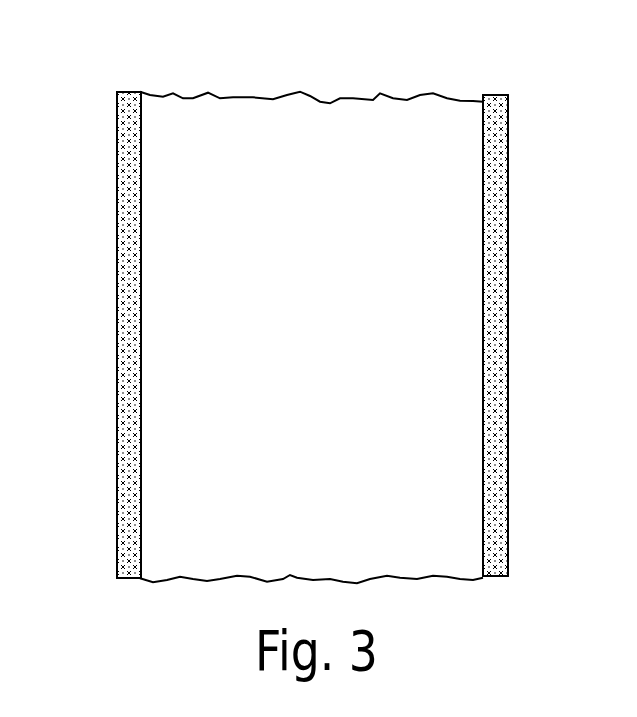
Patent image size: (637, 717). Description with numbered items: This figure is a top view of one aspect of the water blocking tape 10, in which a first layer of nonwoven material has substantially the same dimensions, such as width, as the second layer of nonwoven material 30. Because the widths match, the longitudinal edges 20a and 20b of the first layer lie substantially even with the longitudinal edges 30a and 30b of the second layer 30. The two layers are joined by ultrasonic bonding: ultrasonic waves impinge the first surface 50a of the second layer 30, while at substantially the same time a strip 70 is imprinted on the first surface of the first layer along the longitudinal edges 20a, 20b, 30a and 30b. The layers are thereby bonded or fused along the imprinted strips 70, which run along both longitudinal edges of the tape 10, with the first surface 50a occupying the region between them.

The water blocking tape 10 is at (422, 68).
The longitudinal edge of the first layer 20a is at (116, 493).
The longitudinal edge of the first layer 20b is at (508, 128).
The second layer of nonwoven material 30 is at (157, 190).
The longitudinal edge of the second layer 30a is at (116, 555).
The longitudinal edge of the second layer 30b is at (508, 390).
The first surface of the second layer 50a is at (340, 344).
The strip 70 is at (117, 335).